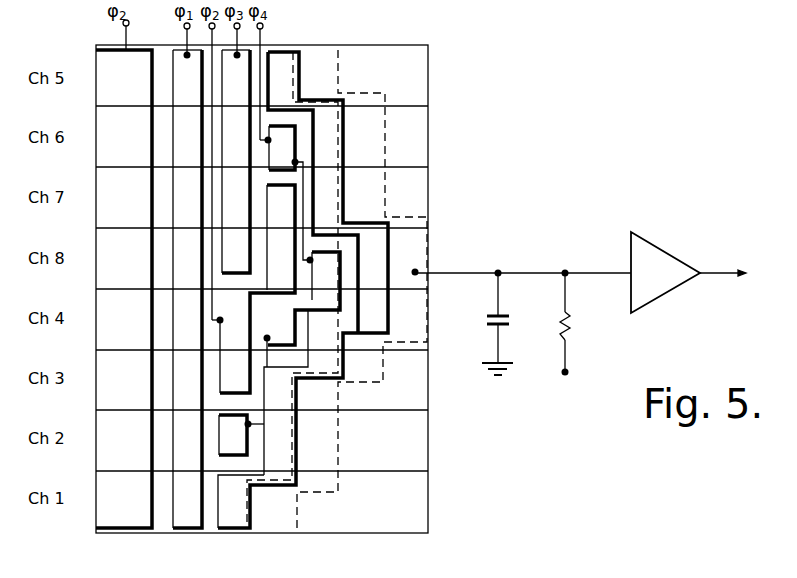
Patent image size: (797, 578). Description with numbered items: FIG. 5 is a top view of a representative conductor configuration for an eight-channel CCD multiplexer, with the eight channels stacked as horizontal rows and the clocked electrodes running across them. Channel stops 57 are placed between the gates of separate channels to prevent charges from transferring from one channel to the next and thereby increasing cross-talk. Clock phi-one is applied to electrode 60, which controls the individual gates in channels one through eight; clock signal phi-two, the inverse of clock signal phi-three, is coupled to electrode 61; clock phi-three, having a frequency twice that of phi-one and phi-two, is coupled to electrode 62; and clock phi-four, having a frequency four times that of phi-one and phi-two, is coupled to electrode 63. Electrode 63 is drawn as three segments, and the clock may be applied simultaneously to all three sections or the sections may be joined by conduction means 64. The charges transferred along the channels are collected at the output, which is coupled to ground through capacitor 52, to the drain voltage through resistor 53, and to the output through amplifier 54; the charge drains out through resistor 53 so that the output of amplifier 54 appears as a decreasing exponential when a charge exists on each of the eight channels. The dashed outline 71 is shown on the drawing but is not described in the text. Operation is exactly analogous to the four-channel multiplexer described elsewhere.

The capacitor 52 is at (492, 315).
The resistor 53 is at (568, 318).
The amplifier 54 is at (665, 247).
The channel stops 57 is at (113, 107).
The electrode 60 is at (177, 528).
The electrode 61 is at (262, 50).
The electrode 62 is at (257, 289).
The electrode 63 is at (326, 447).
The conduction means 64 is at (303, 213).
The dashed region 71 is at (293, 521).